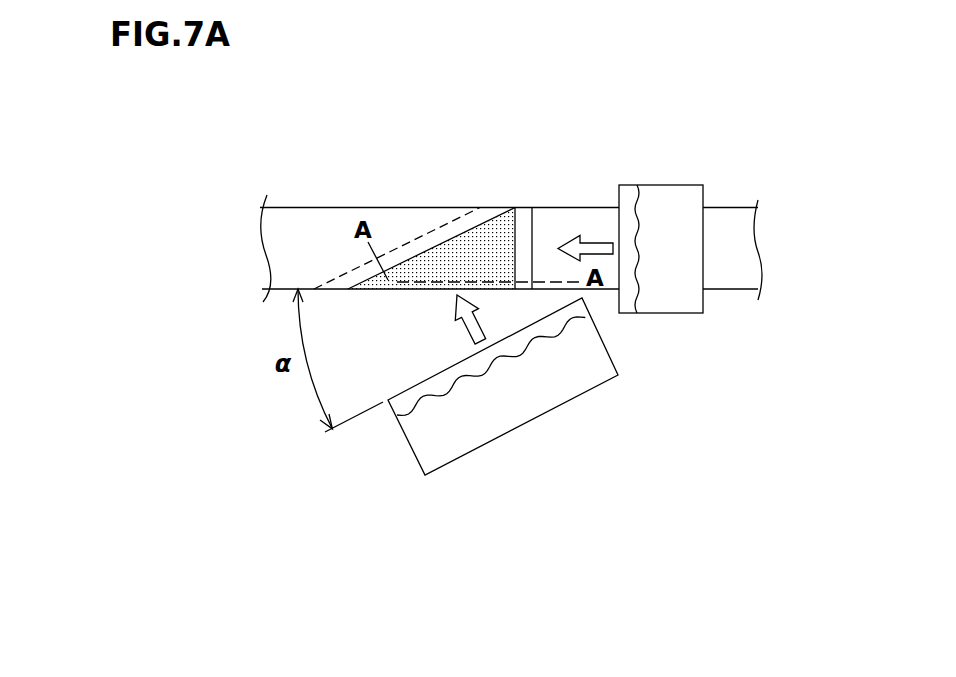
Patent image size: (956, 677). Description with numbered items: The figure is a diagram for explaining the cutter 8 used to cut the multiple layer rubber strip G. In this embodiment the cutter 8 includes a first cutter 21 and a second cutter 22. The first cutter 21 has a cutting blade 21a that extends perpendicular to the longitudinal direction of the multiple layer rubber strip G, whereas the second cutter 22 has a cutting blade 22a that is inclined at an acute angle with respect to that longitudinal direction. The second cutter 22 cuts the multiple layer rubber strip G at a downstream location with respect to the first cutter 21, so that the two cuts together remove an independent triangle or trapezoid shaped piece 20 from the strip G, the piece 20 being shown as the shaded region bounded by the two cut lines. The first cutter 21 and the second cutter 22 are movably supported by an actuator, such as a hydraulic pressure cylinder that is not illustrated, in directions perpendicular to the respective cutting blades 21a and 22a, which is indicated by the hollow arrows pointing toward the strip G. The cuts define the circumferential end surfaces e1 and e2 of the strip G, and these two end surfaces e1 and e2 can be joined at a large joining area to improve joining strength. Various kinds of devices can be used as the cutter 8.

The cutter 8 is at (647, 405).
The piece 20 is at (443, 268).
The first cutter 21 is at (672, 184).
The cutting blade 21a is at (627, 228).
The second cutter 22 is at (495, 440).
The cutting blade 22a is at (420, 380).
The multiple layer rubber strip G is at (308, 205).
The circumferential end surface e1 is at (511, 243).
The circumferential end surface e2 is at (440, 244).